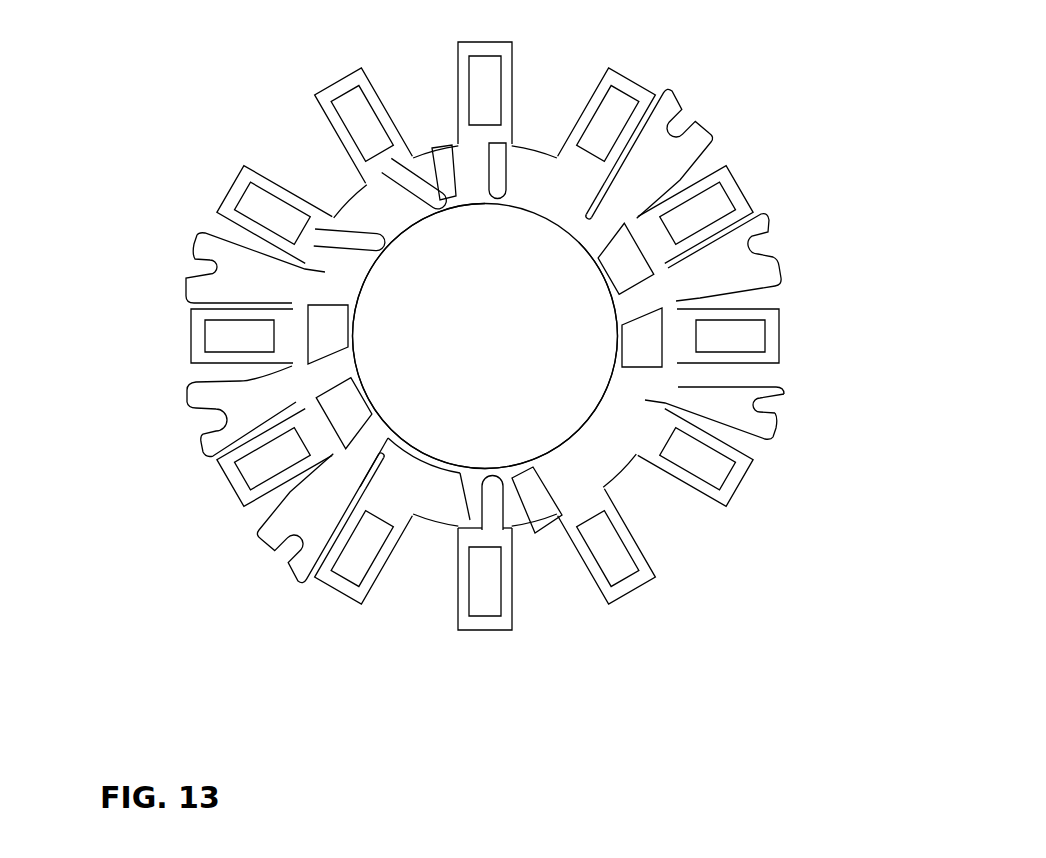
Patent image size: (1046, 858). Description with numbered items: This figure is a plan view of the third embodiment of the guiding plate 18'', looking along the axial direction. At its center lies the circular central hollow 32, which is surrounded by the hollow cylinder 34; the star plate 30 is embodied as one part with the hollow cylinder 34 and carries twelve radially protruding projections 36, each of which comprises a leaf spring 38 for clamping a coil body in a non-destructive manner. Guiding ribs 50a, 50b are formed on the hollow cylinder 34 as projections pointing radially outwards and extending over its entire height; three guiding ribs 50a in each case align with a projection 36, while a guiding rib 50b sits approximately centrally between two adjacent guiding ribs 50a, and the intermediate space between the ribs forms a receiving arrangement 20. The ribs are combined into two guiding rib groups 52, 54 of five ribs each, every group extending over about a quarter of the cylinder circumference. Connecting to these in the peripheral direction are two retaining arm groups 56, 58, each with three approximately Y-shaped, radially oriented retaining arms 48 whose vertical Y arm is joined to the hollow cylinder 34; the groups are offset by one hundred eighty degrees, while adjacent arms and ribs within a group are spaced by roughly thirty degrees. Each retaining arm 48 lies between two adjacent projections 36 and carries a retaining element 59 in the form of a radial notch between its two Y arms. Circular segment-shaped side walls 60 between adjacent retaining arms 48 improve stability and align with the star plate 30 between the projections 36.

The guiding plate 18'' is at (484, 355).
The receiving arrangement 20 is at (490, 484).
The star plate 30 is at (438, 507).
The central hollow 32 is at (410, 386).
The hollow cylinder 34 is at (540, 205).
The projection 36 is at (742, 197).
The leaf spring 38 is at (700, 210).
The retaining arm 48 is at (740, 388).
The guiding rib 50a is at (470, 528).
The guiding rib 50b is at (523, 518).
The guiding rib group 52 is at (455, 212).
The guiding rib group 54 is at (546, 446).
The retaining arm group 56 is at (360, 353).
The retaining arm group 58 is at (599, 317).
The retaining element 59 is at (768, 408).
The side wall 60 is at (672, 335).